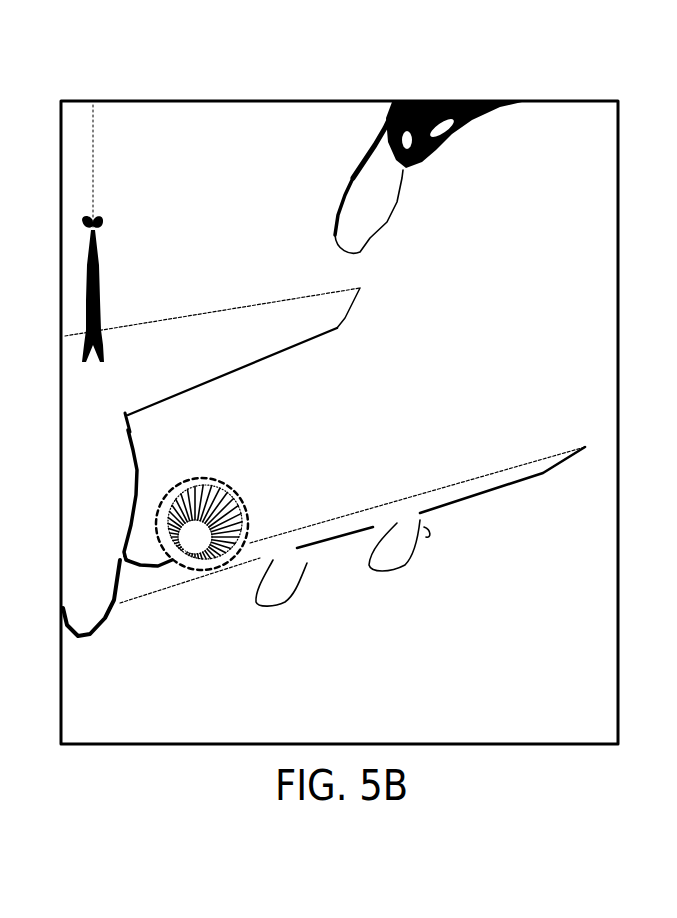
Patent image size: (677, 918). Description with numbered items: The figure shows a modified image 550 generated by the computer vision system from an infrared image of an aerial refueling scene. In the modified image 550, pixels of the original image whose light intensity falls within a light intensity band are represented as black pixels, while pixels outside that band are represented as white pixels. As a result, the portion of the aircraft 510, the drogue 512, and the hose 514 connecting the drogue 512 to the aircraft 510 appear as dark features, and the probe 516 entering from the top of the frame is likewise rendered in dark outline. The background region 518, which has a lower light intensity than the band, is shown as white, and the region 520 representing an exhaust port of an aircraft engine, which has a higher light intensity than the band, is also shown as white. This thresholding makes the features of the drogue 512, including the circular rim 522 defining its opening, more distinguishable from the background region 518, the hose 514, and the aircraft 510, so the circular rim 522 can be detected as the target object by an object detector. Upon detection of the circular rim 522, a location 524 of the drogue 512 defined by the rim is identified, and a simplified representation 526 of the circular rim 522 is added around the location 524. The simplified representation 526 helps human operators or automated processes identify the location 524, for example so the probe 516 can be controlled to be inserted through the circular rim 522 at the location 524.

The aircraft 510 is at (74, 545).
The drogue 512 is at (170, 515).
The hose 514 is at (142, 558).
The probe 516 is at (388, 153).
The background region 518 is at (212, 155).
The region 520 is at (420, 540).
The circular rim 522 is at (208, 488).
The location 524 is at (196, 552).
The simplified representation 526 is at (180, 565).
The modified image 550 is at (559, 81).